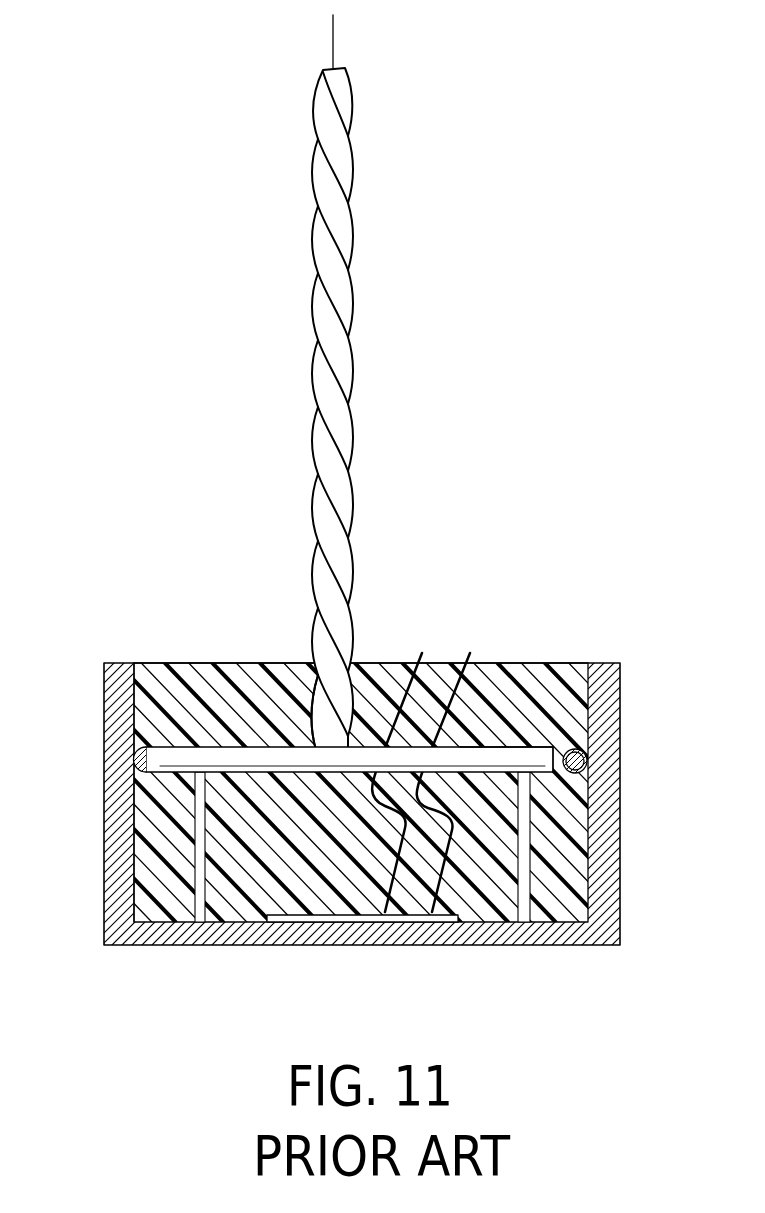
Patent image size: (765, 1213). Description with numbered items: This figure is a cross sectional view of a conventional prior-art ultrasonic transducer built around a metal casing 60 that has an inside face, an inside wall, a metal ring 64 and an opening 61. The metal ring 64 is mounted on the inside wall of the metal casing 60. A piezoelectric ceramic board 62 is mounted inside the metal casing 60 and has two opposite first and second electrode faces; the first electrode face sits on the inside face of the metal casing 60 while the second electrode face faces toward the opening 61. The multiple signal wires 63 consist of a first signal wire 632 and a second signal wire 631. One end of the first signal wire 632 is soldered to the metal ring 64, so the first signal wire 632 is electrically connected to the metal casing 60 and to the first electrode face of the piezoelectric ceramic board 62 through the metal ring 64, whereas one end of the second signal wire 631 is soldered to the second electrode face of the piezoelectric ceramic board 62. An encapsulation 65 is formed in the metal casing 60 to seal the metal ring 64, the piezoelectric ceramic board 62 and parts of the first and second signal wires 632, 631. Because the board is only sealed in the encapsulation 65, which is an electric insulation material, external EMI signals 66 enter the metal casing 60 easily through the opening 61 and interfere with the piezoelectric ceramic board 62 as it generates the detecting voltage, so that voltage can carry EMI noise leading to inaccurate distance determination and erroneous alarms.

The metal casing 60 is at (605, 885).
The opening 61 is at (140, 745).
The piezoelectric ceramic board 62 is at (400, 920).
The signal wires 63 is at (353, 422).
The second signal wire 631 is at (316, 643).
The first signal wire 632 is at (500, 757).
The metal ring 64 is at (252, 757).
The encapsulation 65 is at (495, 687).
The EMI signals 66 is at (398, 680).